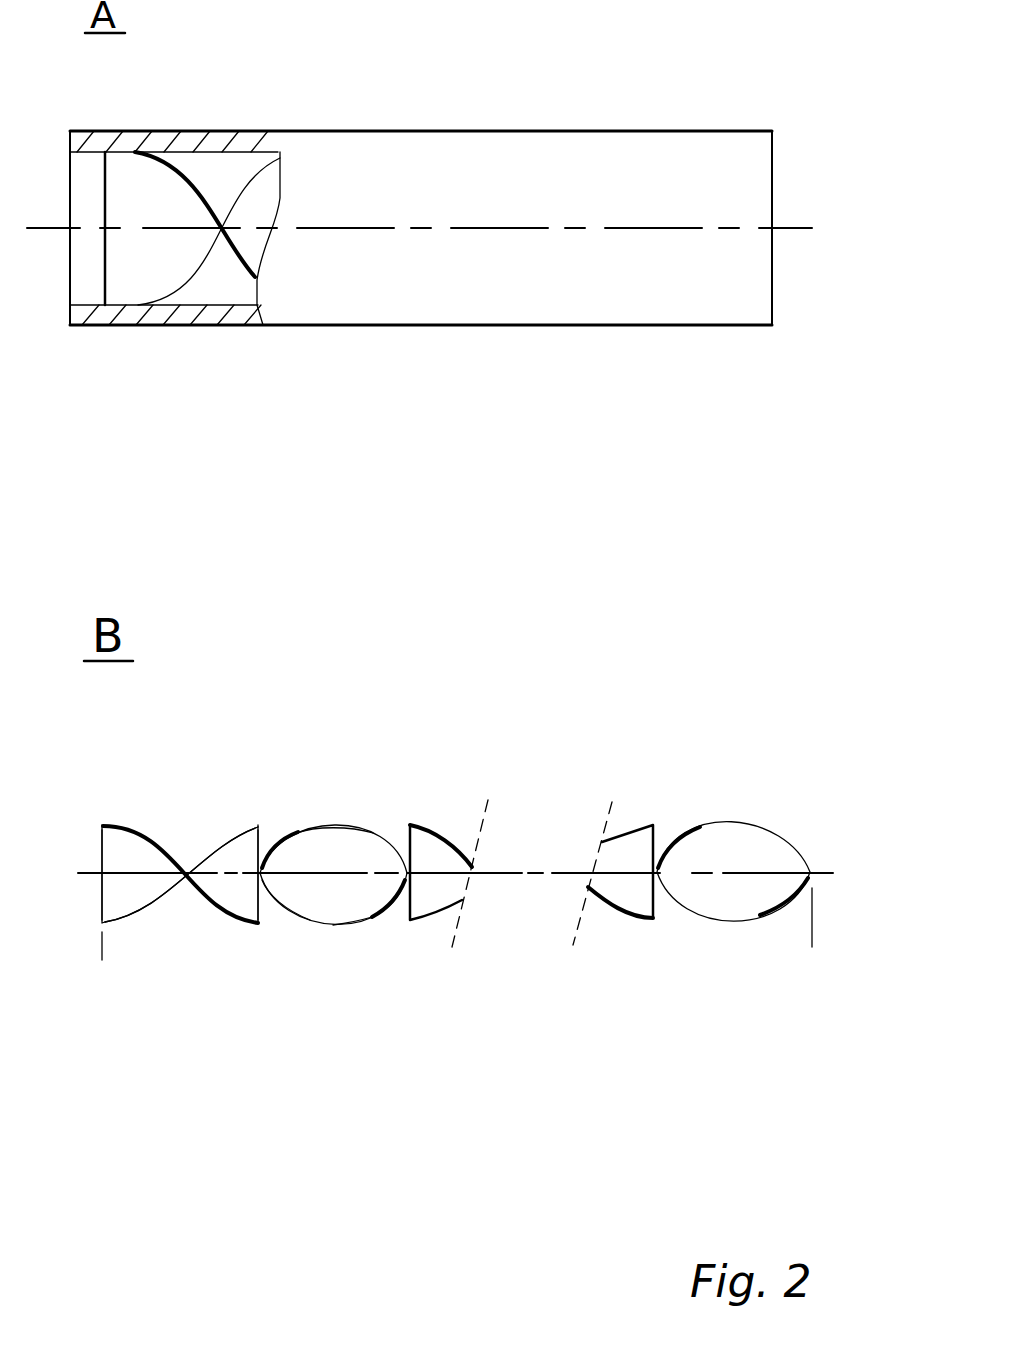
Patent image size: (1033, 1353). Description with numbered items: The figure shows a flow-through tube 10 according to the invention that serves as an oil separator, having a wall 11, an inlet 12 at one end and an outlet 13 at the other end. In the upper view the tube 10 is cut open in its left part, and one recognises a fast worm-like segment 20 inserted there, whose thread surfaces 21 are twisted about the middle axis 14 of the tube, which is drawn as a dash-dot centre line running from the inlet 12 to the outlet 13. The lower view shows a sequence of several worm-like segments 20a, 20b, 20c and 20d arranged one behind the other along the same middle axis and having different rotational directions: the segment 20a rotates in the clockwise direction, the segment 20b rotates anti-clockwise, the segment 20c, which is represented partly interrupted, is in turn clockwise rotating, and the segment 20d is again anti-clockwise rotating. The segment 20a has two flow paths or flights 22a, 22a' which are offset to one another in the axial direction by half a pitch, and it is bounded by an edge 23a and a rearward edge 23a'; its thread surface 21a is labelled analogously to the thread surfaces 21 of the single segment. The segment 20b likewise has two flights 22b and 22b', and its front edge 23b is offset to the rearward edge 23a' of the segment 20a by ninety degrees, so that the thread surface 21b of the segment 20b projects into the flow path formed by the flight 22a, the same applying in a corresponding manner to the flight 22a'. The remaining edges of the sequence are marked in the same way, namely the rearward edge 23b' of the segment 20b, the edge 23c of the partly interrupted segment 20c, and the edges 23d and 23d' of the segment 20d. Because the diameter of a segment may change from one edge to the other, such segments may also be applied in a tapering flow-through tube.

The flow-through tube 10 is at (445, 305).
The wall 11 is at (187, 317).
The inlet 12 is at (70, 263).
The outlet 13 is at (773, 262).
The middle axis 14 is at (793, 226).
The worm-like segment 20 is at (140, 180).
The thread surfaces 21 is at (142, 273).
The worm-like segment 20a is at (120, 843).
The planar face of first lens element 21a is at (133, 895).
The flight 22a is at (181, 910).
The flight 22a' is at (196, 831).
The edge 23a is at (75, 945).
The rearward edge 23a' is at (249, 944).
The worm-like segment 20b is at (330, 843).
The thread surface 21b is at (305, 852).
The flight 22b is at (367, 953).
The flight 22b' is at (298, 936).
The front edge 23b is at (275, 819).
The opposite edge of second lens element 23b' is at (428, 936).
The worm-like segment 20c is at (427, 847).
The edge of third lens element 23c is at (407, 840).
The worm-like segment 20d is at (725, 842).
The edge of fourth lens element 23d is at (707, 805).
The opposite edge of fourth lens element 23d' is at (769, 943).